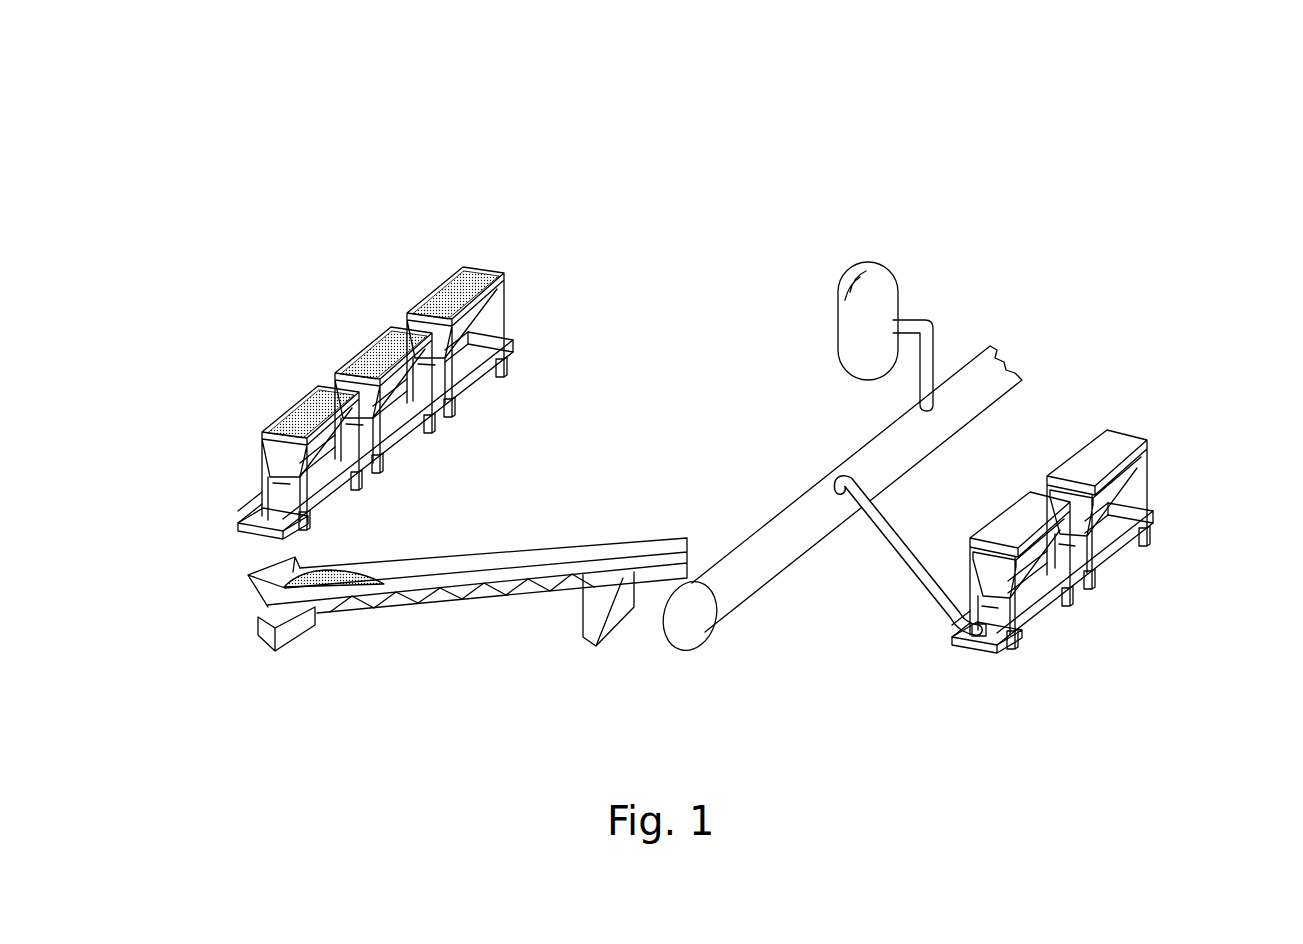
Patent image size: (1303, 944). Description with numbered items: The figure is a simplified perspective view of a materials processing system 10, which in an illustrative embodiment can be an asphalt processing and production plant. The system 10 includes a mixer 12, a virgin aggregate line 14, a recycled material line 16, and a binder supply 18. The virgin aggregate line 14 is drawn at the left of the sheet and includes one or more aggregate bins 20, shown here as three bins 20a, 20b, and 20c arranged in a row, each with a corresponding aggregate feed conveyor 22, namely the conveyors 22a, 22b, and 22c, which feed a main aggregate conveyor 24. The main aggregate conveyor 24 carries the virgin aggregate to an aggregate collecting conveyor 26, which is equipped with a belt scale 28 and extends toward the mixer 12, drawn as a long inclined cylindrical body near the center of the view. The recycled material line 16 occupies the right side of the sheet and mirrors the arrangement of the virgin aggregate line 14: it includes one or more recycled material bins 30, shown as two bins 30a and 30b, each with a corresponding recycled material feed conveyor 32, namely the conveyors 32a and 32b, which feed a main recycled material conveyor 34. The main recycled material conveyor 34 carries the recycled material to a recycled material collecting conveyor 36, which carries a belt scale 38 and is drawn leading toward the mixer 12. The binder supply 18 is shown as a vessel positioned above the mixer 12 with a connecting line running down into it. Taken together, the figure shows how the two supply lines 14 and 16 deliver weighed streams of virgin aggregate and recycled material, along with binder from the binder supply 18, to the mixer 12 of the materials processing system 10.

The materials processing system 10 is at (668, 152).
The mixer 12 is at (792, 532).
The virgin aggregate line 14 is at (270, 210).
The recycled material line 16 is at (1015, 715).
The binder supply 18 is at (870, 265).
The aggregate bins 20 is at (414, 232).
The aggregate bin 20a is at (457, 298).
The aggregate bin 20b is at (388, 356).
The aggregate bin 20c is at (305, 414).
The aggregate feed conveyors 22 is at (587, 382).
The aggregate feed conveyor 22a is at (455, 365).
The aggregate feed conveyor 22b is at (383, 418).
The aggregate feed conveyor 22c is at (312, 478).
The main aggregate conveyor 24 is at (276, 526).
The aggregate collecting conveyor 26 is at (440, 567).
The belt scale 28 is at (586, 603).
The recycled material bins 30 is at (1095, 395).
The recycled material bin 30a is at (1030, 525).
The recycled material bin 30b is at (1105, 465).
The recycled material feed conveyors 32 is at (1232, 552).
The recycled material feed conveyor 32a is at (1100, 537).
The recycled material feed conveyor 32b is at (1022, 600).
The main recycled material conveyor 34 is at (988, 647).
The recycled material collecting conveyor 36 is at (980, 638).
The belt scale 38 is at (878, 527).